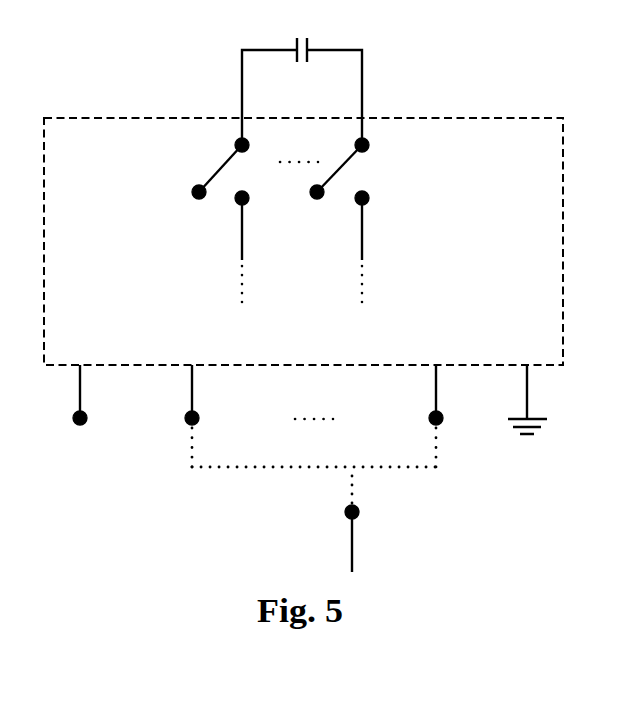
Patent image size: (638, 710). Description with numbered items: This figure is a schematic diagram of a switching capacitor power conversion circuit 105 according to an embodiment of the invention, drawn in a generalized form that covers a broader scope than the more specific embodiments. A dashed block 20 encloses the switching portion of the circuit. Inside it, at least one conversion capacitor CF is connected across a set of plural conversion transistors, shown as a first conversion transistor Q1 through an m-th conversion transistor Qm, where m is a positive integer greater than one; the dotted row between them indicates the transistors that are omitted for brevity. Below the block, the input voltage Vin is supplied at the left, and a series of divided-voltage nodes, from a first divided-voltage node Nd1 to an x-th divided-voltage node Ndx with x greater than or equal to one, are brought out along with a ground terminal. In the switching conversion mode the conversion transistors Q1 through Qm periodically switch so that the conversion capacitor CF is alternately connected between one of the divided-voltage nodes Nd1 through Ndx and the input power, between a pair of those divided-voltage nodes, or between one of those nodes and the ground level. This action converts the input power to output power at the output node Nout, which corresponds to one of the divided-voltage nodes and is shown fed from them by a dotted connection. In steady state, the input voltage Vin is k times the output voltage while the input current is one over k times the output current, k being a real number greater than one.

The switching capacitor power conversion circuit 105 is at (130, 47).
The switch array block 20 is at (462, 118).
The conversion capacitor CF is at (302, 80).
The conversion transistor Q1 is at (236, 220).
The conversion transistor Qm is at (366, 220).
The input voltage Vin is at (57, 397).
The divided-voltage node Nd1 is at (168, 416).
The divided-voltage node Ndx is at (460, 416).
The output node Nout is at (384, 524).